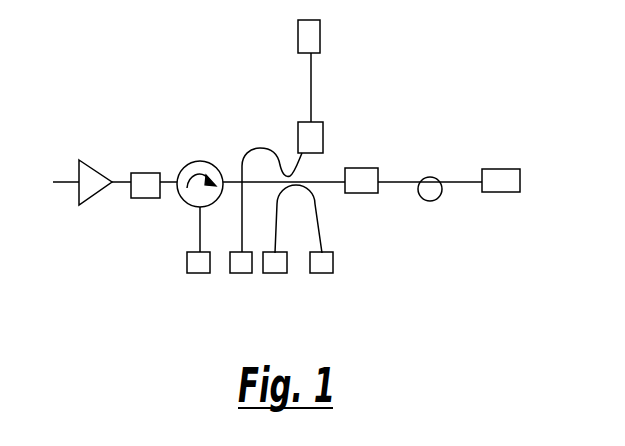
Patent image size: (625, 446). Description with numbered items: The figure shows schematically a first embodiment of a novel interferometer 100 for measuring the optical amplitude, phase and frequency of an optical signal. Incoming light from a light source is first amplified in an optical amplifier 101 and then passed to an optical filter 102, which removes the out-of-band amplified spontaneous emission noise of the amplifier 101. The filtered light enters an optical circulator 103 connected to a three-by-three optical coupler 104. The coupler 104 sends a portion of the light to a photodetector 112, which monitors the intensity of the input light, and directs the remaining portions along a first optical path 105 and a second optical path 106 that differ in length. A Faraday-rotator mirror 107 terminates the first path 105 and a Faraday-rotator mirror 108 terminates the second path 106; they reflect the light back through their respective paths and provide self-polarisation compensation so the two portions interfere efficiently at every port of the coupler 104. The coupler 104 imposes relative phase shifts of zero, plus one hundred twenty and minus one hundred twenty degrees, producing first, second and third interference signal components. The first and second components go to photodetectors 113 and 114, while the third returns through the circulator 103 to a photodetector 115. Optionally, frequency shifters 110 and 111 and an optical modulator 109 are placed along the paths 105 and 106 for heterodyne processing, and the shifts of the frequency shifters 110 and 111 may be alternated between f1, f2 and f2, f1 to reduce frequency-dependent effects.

The interferometer 100 is at (213, 73).
The optical amplifier 101 is at (92, 165).
The optical filter 102 is at (150, 173).
The optical circulator 103 is at (198, 160).
The 3×3 optical coupler 104 is at (293, 173).
The first optical path 105 is at (405, 182).
The second optical path 106 is at (311, 75).
The Faraday-rotator mirror 107 is at (495, 192).
The Faraday-rotator mirror 108 is at (320, 33).
The optical modulator 109 is at (437, 200).
The frequency shifter 110 is at (323, 137).
The frequency shifter 111 is at (360, 193).
The photodetector 112 is at (323, 273).
The photodetector 113 is at (275, 273).
The photodetector 114 is at (240, 273).
The photodetector 115 is at (197, 273).